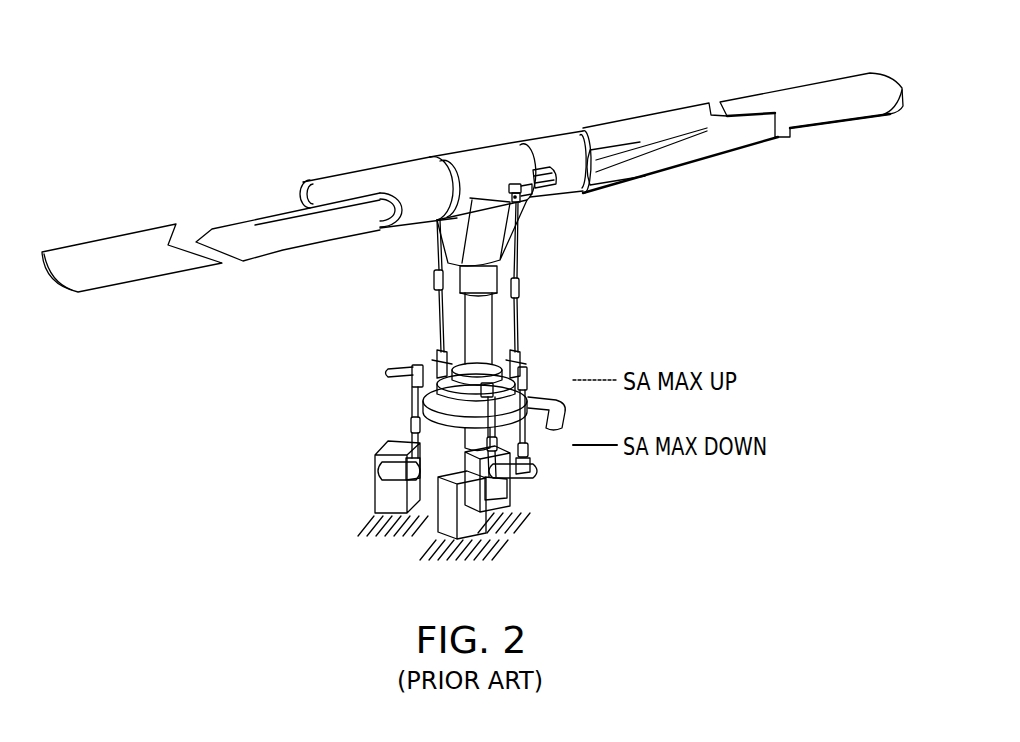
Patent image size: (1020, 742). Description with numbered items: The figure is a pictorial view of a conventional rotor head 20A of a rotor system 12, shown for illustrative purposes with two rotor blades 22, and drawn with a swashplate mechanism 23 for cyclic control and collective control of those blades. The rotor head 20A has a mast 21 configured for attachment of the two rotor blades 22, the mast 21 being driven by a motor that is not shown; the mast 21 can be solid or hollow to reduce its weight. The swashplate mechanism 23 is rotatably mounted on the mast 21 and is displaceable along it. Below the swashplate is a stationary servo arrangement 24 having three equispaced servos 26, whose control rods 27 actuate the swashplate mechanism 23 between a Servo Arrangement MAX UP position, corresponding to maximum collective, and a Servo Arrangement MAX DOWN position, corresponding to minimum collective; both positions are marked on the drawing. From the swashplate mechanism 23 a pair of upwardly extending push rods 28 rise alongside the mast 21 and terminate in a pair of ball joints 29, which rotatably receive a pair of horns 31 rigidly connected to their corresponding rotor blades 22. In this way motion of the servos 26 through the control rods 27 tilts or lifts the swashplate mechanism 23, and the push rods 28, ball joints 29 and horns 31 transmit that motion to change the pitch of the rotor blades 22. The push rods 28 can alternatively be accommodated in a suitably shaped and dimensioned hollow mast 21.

The rotor system 12 is at (291, 45).
The rotor head 20A is at (258, 90).
The rotor blade 22 is at (839, 127).
The ball joint 29 is at (516, 186).
The horn 31 is at (541, 166).
The push rod 28 is at (438, 296).
The mast 21 is at (481, 333).
The swashplate mechanism 23 is at (349, 375).
The control rod 27 is at (412, 408).
The servo 26 is at (376, 503).
The stationary servo arrangement 24 is at (302, 548).